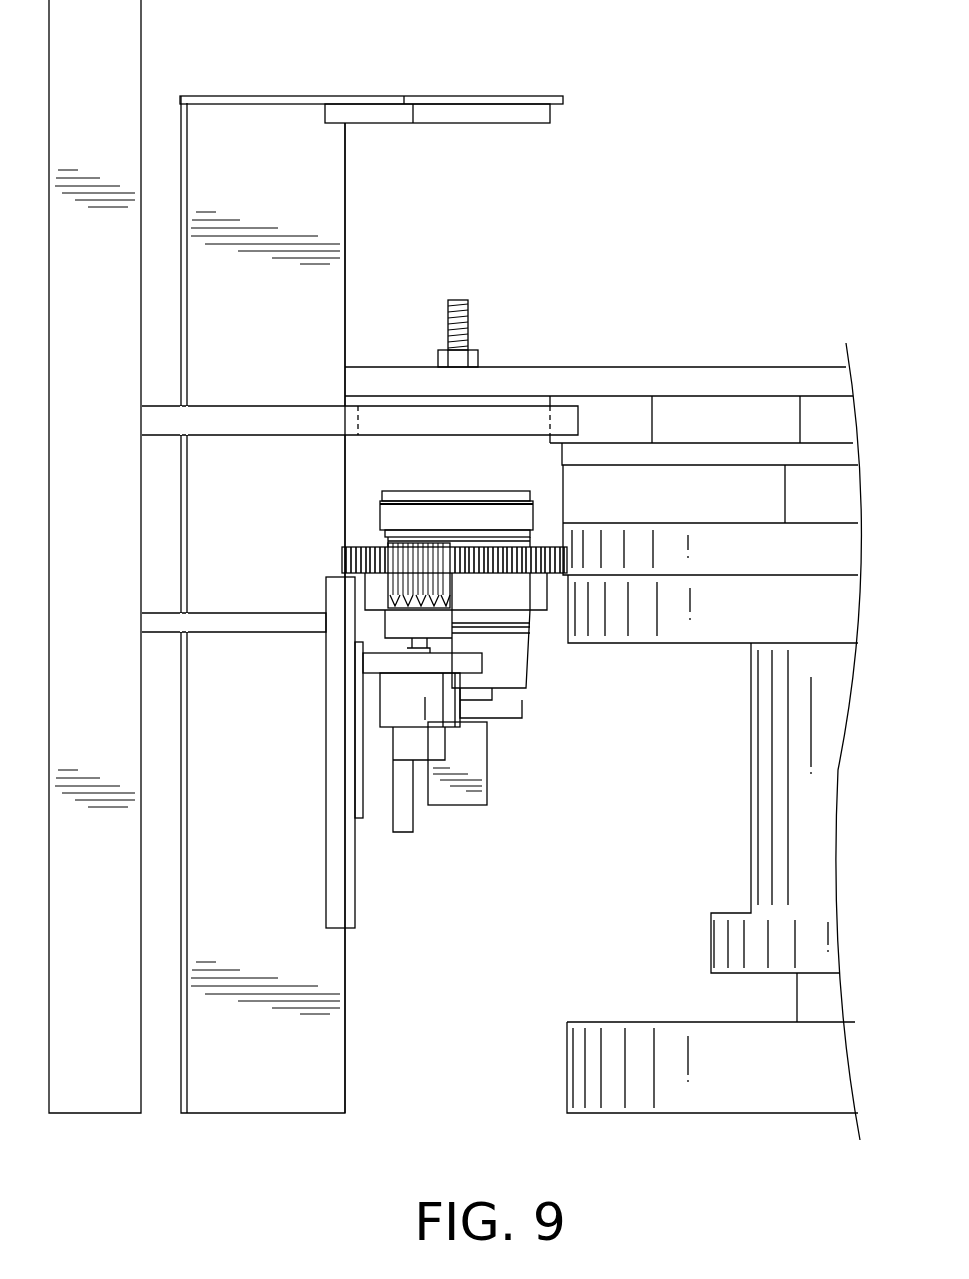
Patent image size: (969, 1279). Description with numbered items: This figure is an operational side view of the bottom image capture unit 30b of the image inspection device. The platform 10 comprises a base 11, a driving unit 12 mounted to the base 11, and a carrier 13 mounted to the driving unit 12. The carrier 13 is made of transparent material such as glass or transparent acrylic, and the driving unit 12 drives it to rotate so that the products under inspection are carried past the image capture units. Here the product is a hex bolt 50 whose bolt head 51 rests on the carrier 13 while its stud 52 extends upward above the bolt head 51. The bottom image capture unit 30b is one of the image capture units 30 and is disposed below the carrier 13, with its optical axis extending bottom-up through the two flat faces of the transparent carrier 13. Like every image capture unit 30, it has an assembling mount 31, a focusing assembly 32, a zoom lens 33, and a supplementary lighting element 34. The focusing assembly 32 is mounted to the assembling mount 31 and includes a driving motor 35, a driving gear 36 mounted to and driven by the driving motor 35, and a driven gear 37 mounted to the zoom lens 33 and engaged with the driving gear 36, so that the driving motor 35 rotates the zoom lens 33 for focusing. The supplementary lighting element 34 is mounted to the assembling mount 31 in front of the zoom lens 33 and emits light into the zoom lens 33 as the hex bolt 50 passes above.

The platform 10 is at (630, 862).
The base 11 is at (672, 1048).
The driving unit 12 is at (792, 781).
The carrier 13 is at (685, 388).
The image capture unit 30 is at (511, 596).
The bottom image capture unit 30b is at (527, 776).
The assembling mount 31 is at (338, 681).
The focusing assembly 32 is at (366, 699).
The zoom lens 33 is at (525, 514).
The supplementary lighting element 34 is at (517, 117).
The driving motor 35 is at (445, 698).
The driving gear 36 is at (400, 557).
The driven gear 37 is at (528, 562).
The hex bolt 50 is at (512, 303).
The bolt head 51 is at (478, 357).
The stud 52 is at (460, 300).